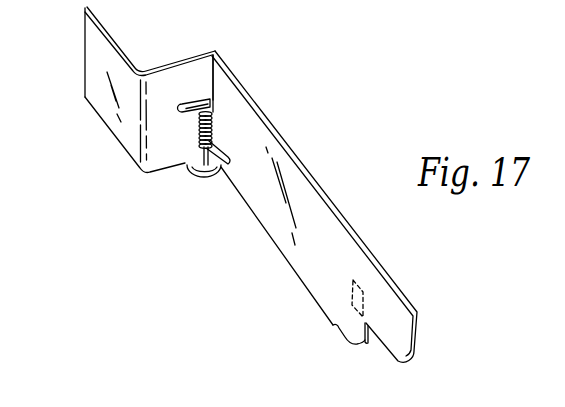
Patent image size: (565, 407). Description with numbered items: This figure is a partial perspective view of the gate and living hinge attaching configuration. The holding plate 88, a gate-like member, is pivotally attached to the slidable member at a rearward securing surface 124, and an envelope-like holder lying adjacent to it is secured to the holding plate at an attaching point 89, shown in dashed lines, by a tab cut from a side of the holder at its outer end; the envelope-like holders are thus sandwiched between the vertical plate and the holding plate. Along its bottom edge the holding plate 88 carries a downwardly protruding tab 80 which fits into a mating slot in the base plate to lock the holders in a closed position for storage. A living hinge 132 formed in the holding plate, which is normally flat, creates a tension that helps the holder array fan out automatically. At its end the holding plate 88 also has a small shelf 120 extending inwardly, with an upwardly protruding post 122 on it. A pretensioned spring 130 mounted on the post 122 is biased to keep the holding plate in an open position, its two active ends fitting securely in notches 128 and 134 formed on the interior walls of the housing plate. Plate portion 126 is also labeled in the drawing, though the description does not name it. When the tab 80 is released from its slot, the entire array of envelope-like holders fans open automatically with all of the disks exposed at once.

The downwardly protruding tab 80 is at (334, 327).
The holding plate 88 is at (314, 210).
The attaching point 89 is at (362, 289).
The small shelf 120 is at (185, 163).
The upwardly protruding post 122 is at (198, 168).
The rearward securing surface 124 is at (91, 62).
The plate 126 is at (157, 83).
The notch 128 is at (181, 104).
The pretensioned spring 130 is at (212, 117).
The living hinge 132 is at (213, 82).
The notch 134 is at (228, 158).